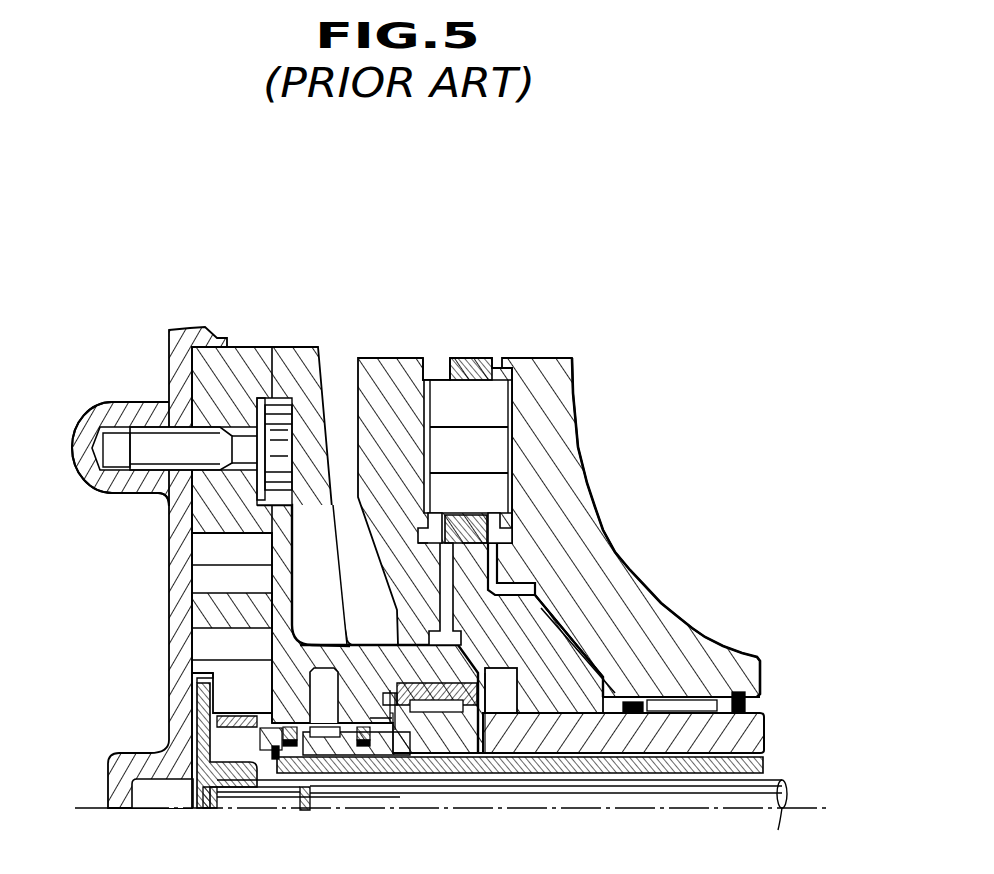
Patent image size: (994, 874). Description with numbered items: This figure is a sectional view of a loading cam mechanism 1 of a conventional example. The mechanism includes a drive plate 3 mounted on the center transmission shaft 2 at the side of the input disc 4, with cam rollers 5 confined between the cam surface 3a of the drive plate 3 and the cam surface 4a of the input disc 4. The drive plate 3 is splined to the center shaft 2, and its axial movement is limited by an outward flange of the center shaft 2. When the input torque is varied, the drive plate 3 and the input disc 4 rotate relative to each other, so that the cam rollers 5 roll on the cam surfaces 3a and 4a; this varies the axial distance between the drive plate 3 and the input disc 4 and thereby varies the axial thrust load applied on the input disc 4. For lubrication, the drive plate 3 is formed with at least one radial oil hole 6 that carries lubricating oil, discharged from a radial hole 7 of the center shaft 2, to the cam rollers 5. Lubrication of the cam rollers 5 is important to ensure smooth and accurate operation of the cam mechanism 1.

The loading cam mechanism 1 is at (511, 302).
The center transmission shaft 2 is at (762, 737).
The drive plate 3 is at (397, 521).
The cam surface 3a is at (448, 372).
The input disc 4 is at (592, 553).
The cam surface 4a is at (510, 402).
The cam rollers 5 is at (495, 455).
The radial oil hole 6 is at (440, 590).
The radial hole 7 is at (484, 715).